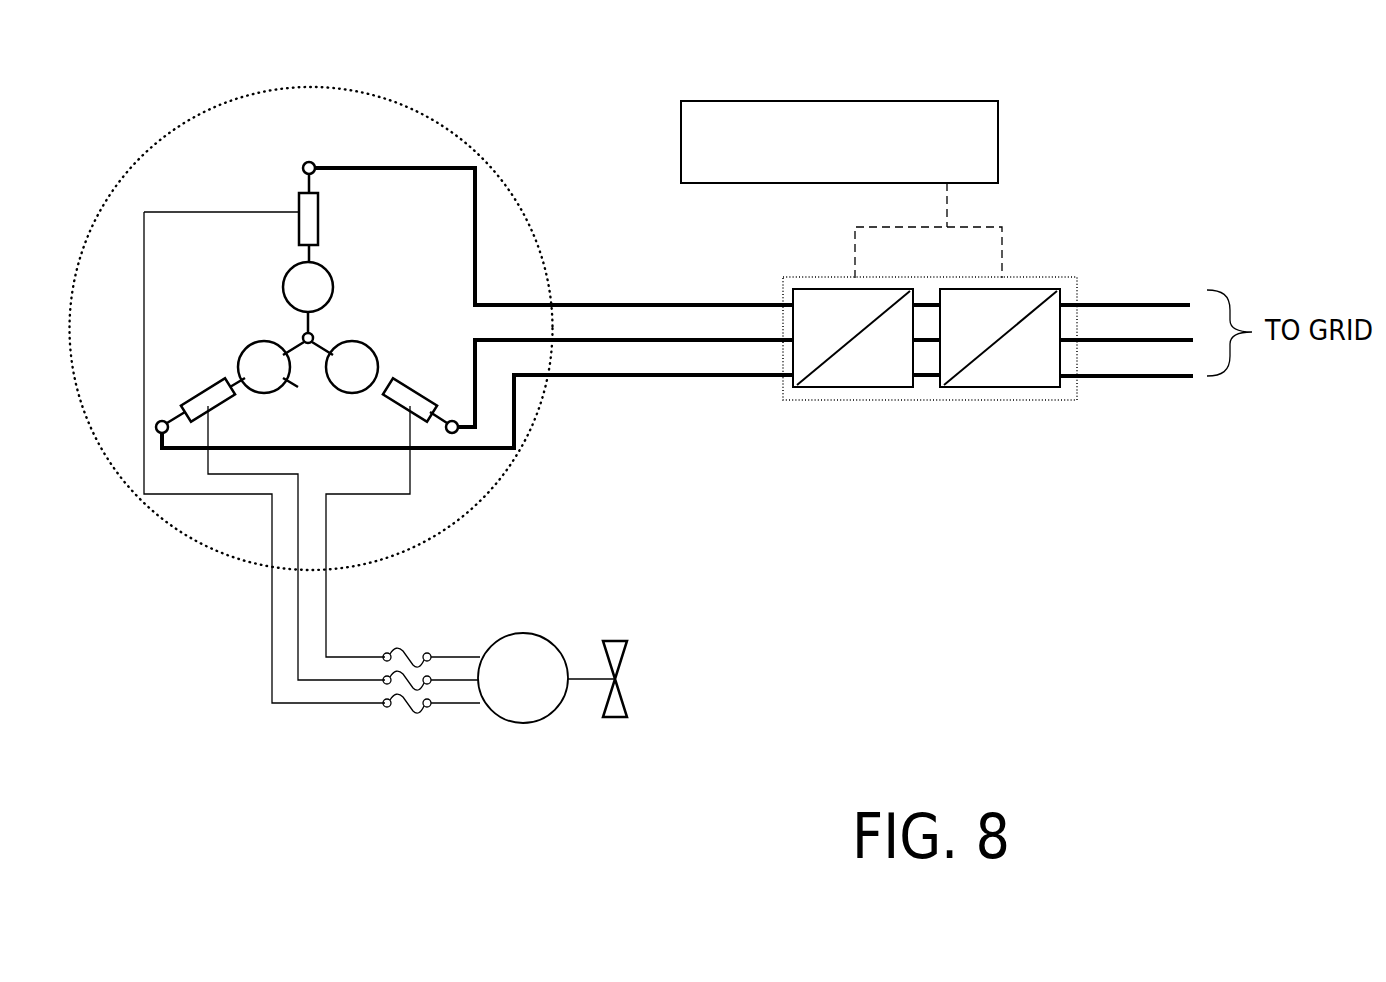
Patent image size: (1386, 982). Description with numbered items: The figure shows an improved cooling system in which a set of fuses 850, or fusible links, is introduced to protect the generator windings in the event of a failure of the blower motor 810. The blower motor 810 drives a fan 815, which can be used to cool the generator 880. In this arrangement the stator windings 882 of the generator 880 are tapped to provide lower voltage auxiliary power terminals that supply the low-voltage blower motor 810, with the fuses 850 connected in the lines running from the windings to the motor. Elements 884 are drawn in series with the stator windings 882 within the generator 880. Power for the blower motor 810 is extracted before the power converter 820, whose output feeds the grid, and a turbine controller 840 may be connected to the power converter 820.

The blower motor 810 is at (547, 692).
The fan 815 is at (627, 650).
The power converter 820 is at (1048, 278).
The turbine controller 840 is at (863, 156).
The fuses 850 is at (403, 717).
The generator 880 is at (345, 142).
The stator windings 882 is at (407, 381).
The resistor 884 is at (299, 215).